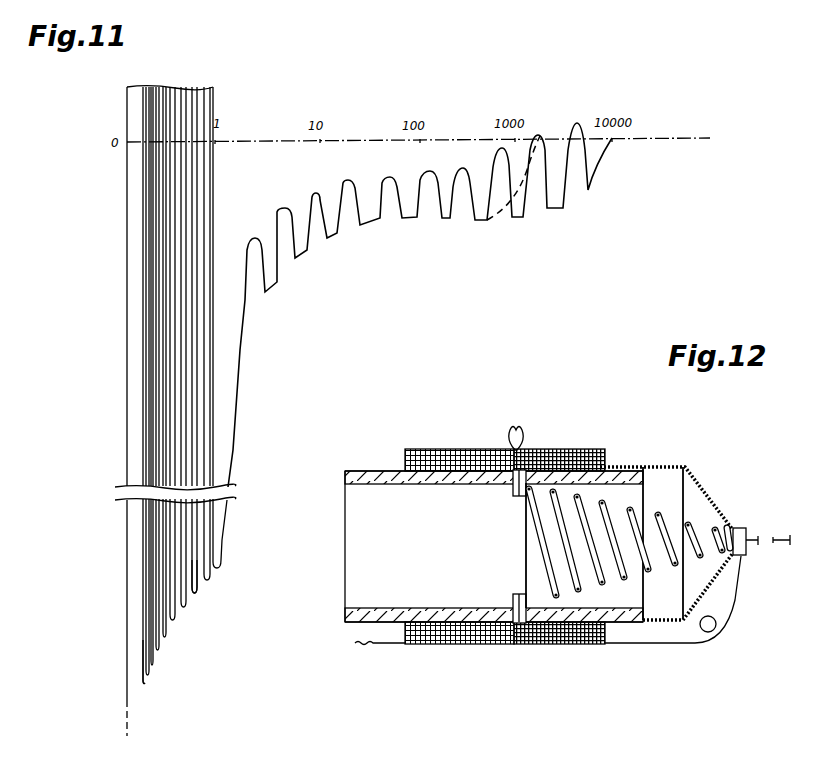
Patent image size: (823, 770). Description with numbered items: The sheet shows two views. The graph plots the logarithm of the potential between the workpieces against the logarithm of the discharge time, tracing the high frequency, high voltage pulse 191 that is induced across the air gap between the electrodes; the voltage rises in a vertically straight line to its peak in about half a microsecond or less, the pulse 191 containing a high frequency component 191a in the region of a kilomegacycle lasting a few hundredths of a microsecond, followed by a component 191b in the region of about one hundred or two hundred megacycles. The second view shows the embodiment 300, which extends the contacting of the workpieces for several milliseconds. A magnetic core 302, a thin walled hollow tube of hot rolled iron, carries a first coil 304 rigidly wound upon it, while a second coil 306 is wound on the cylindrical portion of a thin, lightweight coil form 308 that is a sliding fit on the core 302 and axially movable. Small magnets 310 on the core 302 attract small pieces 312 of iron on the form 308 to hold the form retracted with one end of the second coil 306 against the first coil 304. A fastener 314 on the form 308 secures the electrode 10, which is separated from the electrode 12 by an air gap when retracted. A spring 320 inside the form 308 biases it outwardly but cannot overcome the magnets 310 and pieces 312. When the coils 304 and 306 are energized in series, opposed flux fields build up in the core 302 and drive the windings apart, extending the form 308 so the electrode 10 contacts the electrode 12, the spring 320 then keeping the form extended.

In FIG. 11, the high frequency, high voltage pulse 191 is at (252, 456).
In FIG. 11, the high frequency component 191a is at (152, 683).
In FIG. 11, the component 191b is at (194, 590).
In FIG. 12, the embodiment 300 is at (631, 430).
In FIG. 12, the magnetic core 302 is at (365, 487).
In FIG. 12, the first coil 304 is at (466, 448).
In FIG. 12, the second coil 306 is at (553, 453).
In FIG. 12, the coil form 308 is at (670, 468).
In FIG. 12, the small magnets 310 is at (517, 497).
In FIG. 12, the small pieces of iron 312 is at (530, 452).
In FIG. 12, the fastener 314 is at (741, 528).
In FIG. 12, the spring 320 is at (648, 512).
In FIG. 12, the electrode 10 is at (757, 545).
In FIG. 12, the electrode 12 is at (778, 545).